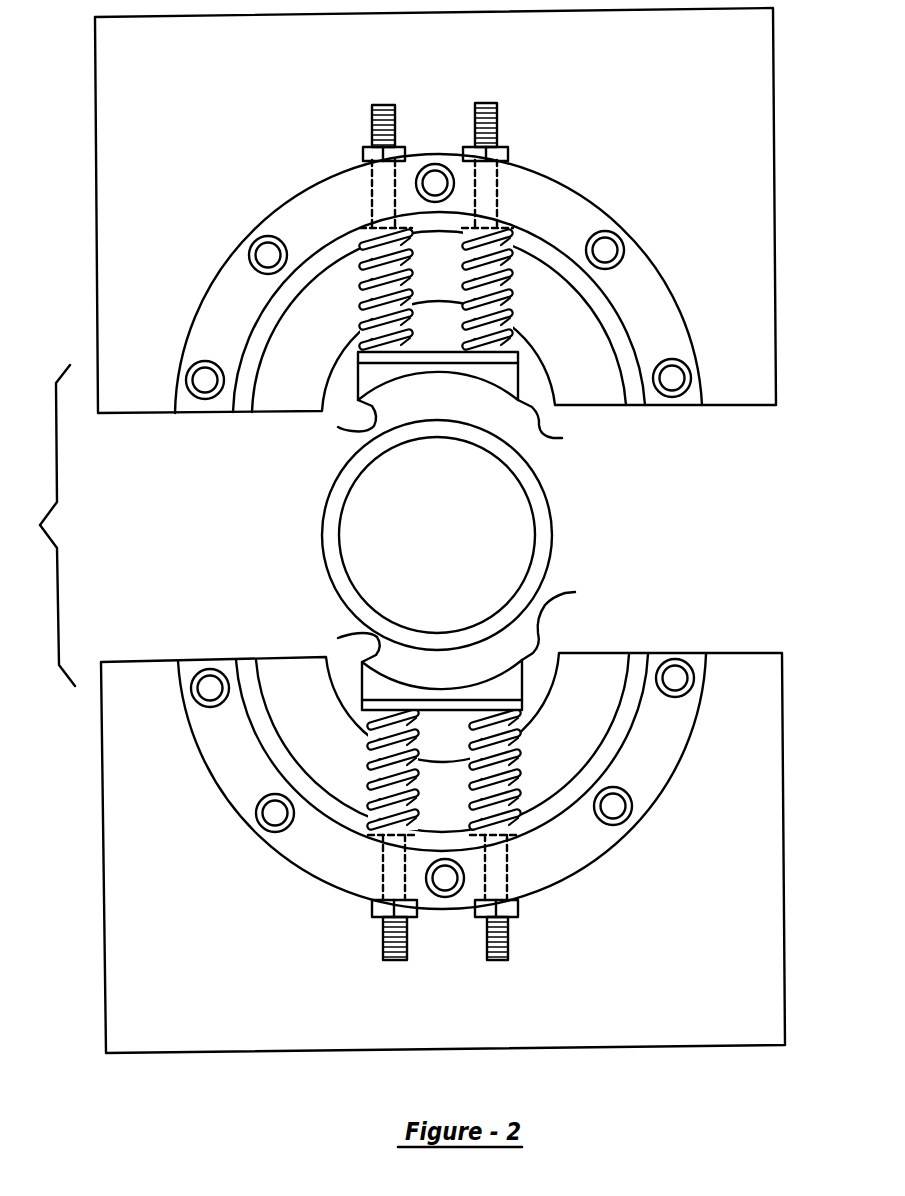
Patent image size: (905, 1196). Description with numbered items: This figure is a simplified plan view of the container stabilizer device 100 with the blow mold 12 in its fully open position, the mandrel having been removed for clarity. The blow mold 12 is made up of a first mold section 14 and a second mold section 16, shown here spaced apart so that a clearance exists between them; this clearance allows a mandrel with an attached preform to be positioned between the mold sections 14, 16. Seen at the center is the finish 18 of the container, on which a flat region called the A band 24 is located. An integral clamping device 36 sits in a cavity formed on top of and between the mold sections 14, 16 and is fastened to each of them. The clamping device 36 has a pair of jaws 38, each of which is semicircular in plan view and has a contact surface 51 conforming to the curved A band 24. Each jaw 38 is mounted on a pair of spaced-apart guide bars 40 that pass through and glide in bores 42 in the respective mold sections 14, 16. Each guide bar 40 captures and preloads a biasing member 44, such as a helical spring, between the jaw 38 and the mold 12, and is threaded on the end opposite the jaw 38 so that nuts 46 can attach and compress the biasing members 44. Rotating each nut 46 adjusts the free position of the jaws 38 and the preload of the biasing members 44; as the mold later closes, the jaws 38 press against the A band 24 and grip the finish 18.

The container stabilizer device 100 is at (475, 530).
The blow mold 12 is at (33, 397).
The first mold section 14 is at (729, 200).
The second mold section 16 is at (784, 817).
The finish 18 is at (279, 513).
The A band 24 is at (546, 500).
The integral clamping device 36 is at (725, 485).
The jaw 38 is at (562, 438).
The guide bar 40 is at (489, 200).
The bore 42 is at (470, 162).
The biasing member 44 is at (514, 272).
The nut 46 is at (509, 152).
The contact surface 51 is at (338, 427).